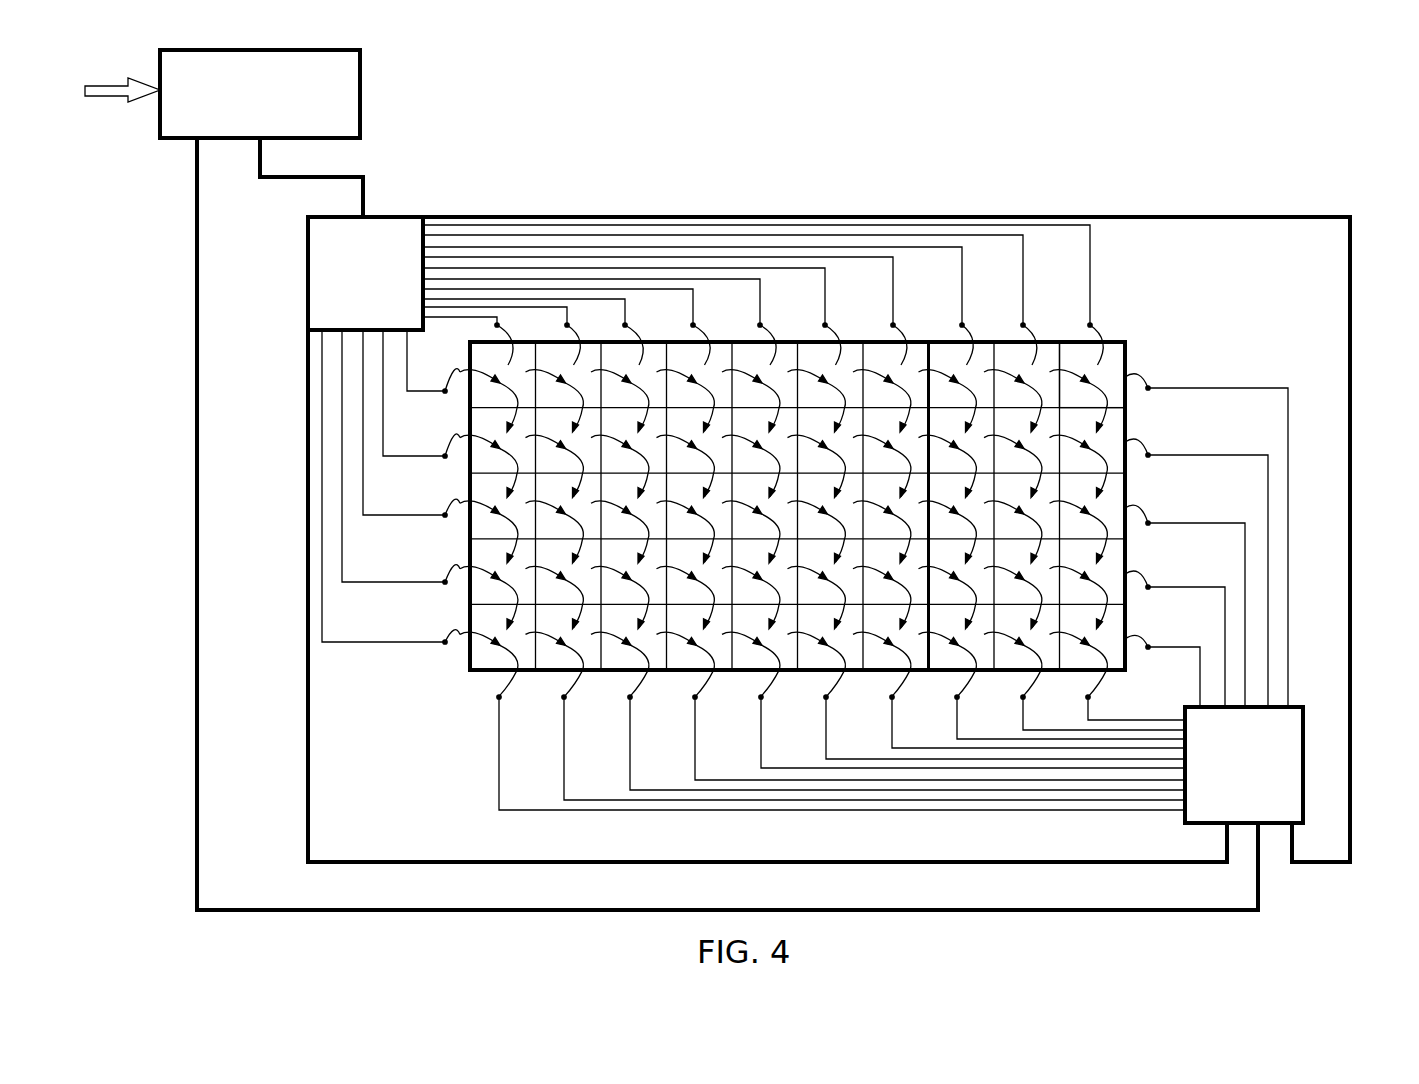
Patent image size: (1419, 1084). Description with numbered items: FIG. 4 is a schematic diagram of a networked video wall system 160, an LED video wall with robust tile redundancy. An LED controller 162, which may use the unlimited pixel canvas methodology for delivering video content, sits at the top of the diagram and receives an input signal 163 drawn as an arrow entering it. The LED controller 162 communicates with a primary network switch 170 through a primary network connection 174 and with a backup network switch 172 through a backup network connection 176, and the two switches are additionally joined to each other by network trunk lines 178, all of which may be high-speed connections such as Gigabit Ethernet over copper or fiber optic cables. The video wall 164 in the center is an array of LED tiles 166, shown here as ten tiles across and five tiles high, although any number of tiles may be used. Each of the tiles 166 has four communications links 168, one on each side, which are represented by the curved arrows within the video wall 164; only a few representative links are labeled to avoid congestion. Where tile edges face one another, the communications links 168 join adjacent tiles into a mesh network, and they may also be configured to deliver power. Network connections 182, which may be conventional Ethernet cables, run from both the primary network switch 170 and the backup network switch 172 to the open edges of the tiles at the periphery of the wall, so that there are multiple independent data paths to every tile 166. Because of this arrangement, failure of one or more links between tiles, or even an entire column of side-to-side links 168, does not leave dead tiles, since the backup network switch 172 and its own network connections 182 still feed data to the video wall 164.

The networked video wall system 160 is at (683, 160).
The LED controller 162 is at (360, 79).
The video input signal 163 is at (102, 98).
The video wall 164 is at (1100, 298).
The LED tiles 166 is at (1130, 370).
The communications links 168 is at (1095, 442).
The primary network switch 170 is at (306, 280).
The backup network switch 172 is at (1305, 805).
The primary network connection 174 is at (368, 182).
The backup network connection 176 is at (195, 738).
The network trunk lines 178 is at (1320, 216).
The network connections 182 is at (748, 238).